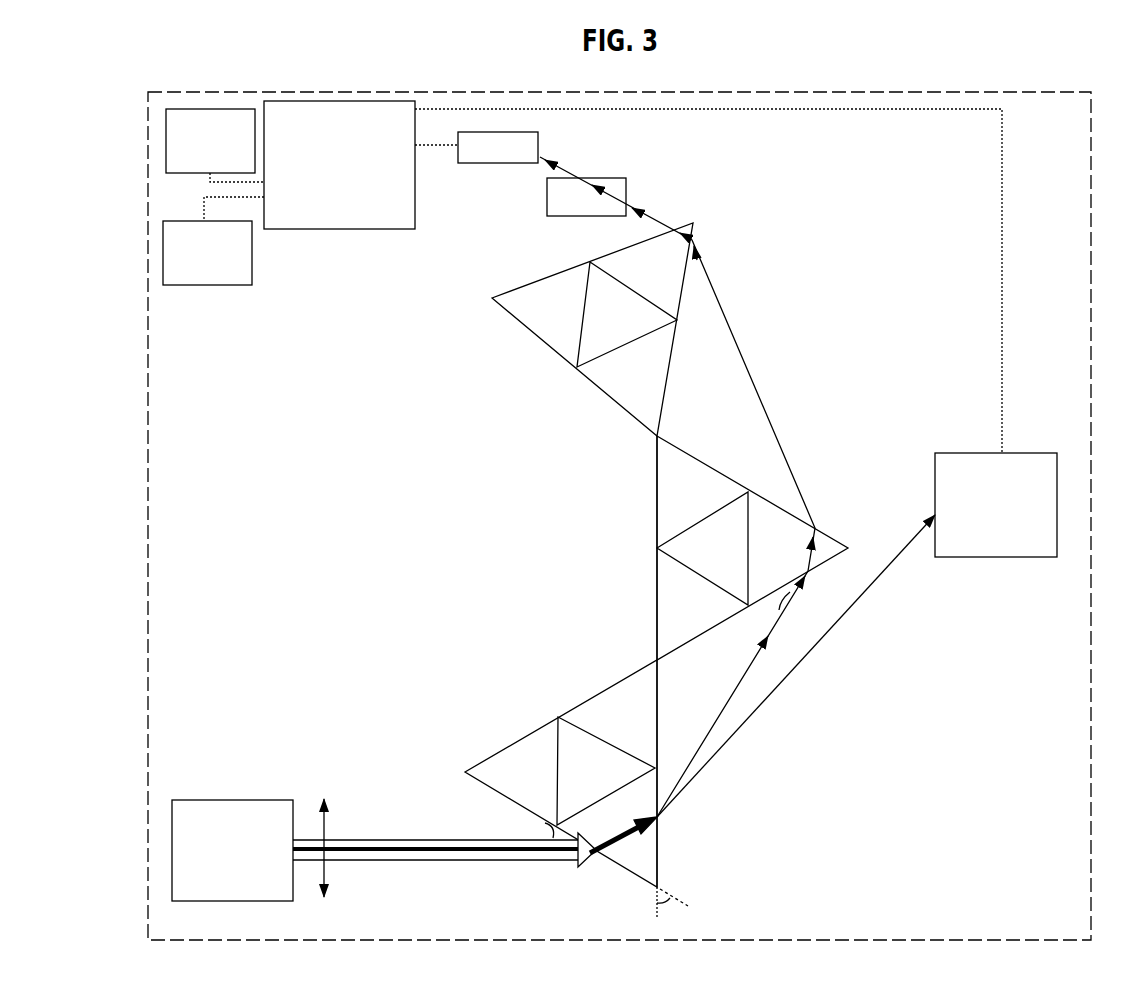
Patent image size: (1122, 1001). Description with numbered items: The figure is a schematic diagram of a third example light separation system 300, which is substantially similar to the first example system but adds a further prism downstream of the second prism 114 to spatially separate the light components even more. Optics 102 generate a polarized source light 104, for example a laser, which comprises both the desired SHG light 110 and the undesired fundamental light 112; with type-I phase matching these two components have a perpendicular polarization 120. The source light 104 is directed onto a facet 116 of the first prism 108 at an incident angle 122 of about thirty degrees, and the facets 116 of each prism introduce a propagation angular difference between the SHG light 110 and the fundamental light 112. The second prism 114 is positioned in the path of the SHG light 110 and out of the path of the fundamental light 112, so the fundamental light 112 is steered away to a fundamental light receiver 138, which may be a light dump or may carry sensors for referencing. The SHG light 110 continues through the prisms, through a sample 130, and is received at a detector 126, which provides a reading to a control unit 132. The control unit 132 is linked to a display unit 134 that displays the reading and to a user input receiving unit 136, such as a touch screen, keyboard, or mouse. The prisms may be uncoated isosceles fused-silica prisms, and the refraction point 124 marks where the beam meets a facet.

The optics 102 is at (232, 850).
The source light 104 is at (482, 863).
The first prism 108 is at (600, 690).
The SHG light 110 is at (403, 840).
The fundamental light 112 is at (415, 858).
The second prism 114 is at (655, 610).
The facets 116 is at (675, 498).
The perpendicular polarization 120 is at (327, 820).
The incident angle 122 is at (553, 820).
The incidence point 124 is at (783, 604).
The detector 126 is at (498, 147).
The sample 130 is at (545, 197).
The control unit 132 is at (633, 277).
The display unit 134 is at (213, 241).
The user input receiving unit 136 is at (215, 145).
The fundamental light receiver 138 is at (996, 505).
The third example light separation system 300 is at (1020, 48).